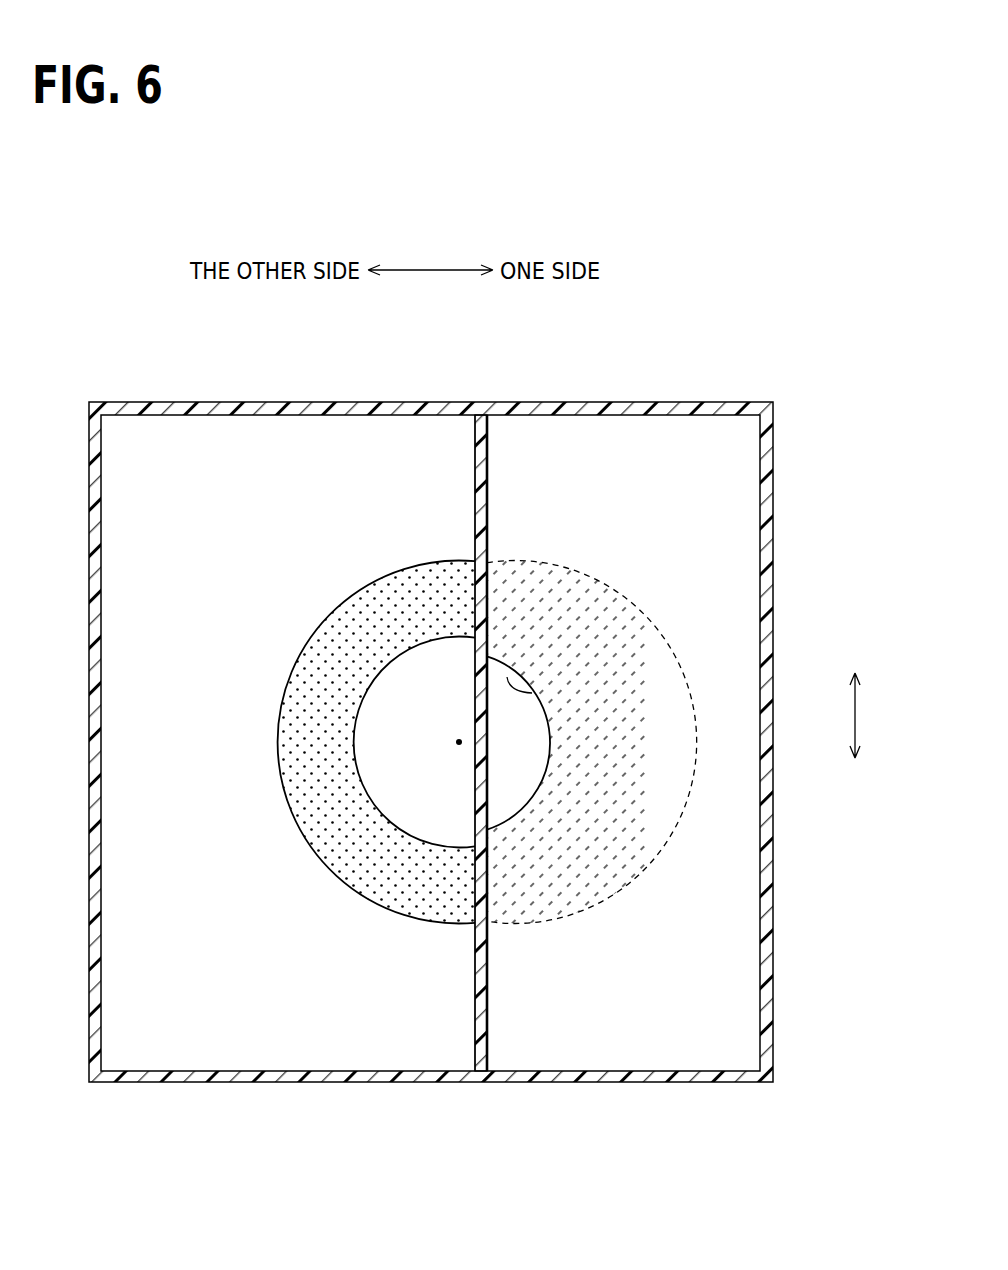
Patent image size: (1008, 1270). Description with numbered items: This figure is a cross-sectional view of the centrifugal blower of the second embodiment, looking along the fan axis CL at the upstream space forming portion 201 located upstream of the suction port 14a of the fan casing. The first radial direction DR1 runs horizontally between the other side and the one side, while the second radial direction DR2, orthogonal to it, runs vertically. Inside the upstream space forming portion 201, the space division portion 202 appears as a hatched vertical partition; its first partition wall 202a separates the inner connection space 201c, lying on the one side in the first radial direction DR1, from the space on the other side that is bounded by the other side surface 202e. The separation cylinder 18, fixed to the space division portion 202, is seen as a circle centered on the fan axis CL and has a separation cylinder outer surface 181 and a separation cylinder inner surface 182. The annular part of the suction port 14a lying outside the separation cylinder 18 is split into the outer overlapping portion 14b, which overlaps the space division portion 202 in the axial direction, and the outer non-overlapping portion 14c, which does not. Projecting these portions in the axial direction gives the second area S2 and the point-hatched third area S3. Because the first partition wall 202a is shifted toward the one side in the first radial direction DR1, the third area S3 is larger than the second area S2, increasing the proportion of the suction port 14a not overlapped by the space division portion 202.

The upstream space forming portion 201 is at (795, 554).
The inner connection space 201c is at (688, 477).
The space division portion 202 is at (463, 536).
The first partition wall 202a is at (476, 498).
The other side surface 202e is at (130, 472).
The separation cylinder inner surface 182 is at (507, 677).
The separation cylinder outer surface 181 is at (550, 713).
The separation cylinder 18 is at (637, 790).
The suction port 14a is at (329, 894).
The outer overlapping portion 14b is at (509, 891).
The outer non-overlapping portion 14c is at (400, 882).
The fan axis CL is at (459, 742).
The second area S2 is at (565, 862).
The third area S3 is at (330, 855).
The first radial direction DR1 is at (428, 270).
The second radial direction DR2 is at (855, 718).